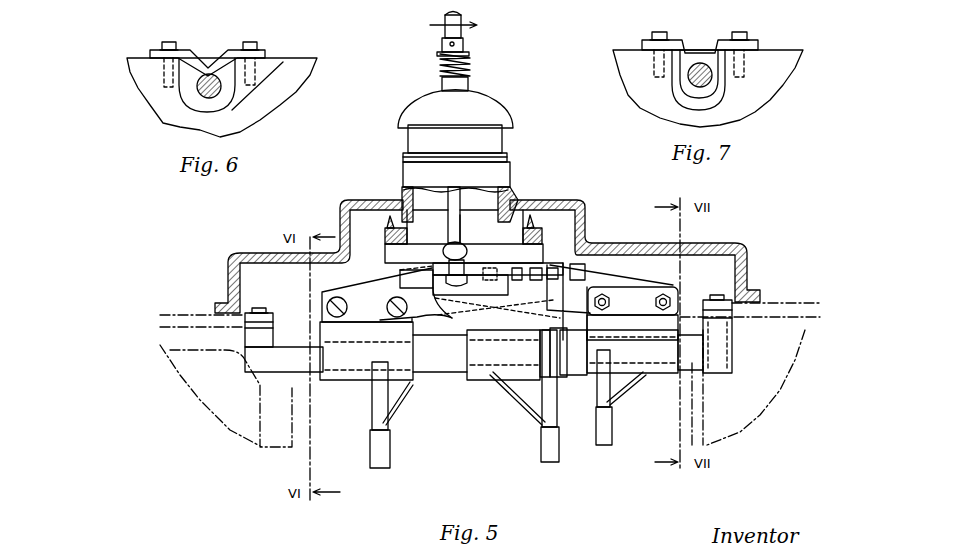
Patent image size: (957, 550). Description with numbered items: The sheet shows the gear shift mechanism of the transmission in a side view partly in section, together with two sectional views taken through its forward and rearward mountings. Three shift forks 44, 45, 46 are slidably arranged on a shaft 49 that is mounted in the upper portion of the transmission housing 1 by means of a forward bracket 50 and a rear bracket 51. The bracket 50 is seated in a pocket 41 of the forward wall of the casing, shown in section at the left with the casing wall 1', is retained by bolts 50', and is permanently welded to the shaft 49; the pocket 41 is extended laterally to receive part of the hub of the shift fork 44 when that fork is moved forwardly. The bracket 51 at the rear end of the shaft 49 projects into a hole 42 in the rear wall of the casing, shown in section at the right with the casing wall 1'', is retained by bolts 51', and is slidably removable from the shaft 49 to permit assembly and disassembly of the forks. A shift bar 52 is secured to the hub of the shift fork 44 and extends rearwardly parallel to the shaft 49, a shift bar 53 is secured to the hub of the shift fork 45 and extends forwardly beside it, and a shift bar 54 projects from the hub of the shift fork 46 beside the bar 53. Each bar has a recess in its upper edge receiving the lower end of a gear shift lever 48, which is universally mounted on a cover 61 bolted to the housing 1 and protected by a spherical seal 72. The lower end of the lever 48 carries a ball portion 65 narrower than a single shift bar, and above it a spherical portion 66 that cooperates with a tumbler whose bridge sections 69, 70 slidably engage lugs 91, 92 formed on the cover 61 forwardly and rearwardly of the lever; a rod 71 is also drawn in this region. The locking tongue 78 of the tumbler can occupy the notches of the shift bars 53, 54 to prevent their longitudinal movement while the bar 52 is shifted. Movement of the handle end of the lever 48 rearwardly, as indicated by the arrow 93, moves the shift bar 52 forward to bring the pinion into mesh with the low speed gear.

In FIG. 5, the transmission housing 1 is at (490, 375).
In FIG. 6, the machine frame 1' is at (222, 97).
In FIG. 7, the machine frame 1'' is at (706, 88).
In FIG. 5, the pocket 41 is at (273, 374).
In FIG. 6, the pocket 41 is at (280, 58).
In FIG. 7, the hole 42 is at (679, 94).
In FIG. 5, the shift fork 44 is at (371, 453).
In FIG. 5, the shift fork 45 is at (612, 431).
In FIG. 5, the shift fork 46 is at (541, 442).
In FIG. 5, the gear shift lever 48 is at (461, 206).
In FIG. 5, the shaft 49 is at (444, 364).
In FIG. 6, the shaft 49 is at (210, 98).
In FIG. 7, the shaft 49 is at (712, 78).
In FIG. 5, the bracket 50 is at (284, 342).
In FIG. 6, the bracket 50 is at (207, 55).
In FIG. 5, the bolts 50' is at (261, 301).
In FIG. 6, the bolts 50' is at (219, 53).
In FIG. 5, the bracket 51 is at (743, 362).
In FIG. 7, the bracket 51 is at (700, 35).
In FIG. 5, the bolts 51' is at (717, 325).
In FIG. 7, the bolts 51' is at (707, 42).
In FIG. 5, the shift bar 52 is at (372, 292).
In FIG. 5, the shift bar 53 is at (627, 283).
In FIG. 5, the shift bar 54 is at (466, 330).
In FIG. 5, the cover 61 is at (366, 197).
In FIG. 5, the ball portion 65 is at (467, 283).
In FIG. 5, the spherical portion 66 is at (467, 255).
In FIG. 5, the bridge section 69 is at (405, 238).
In FIG. 5, the bridge section 70 is at (524, 235).
In FIG. 5, the rod 71 is at (478, 245).
In FIG. 5, the spherical seal 72 is at (503, 110).
In FIG. 5, the locking tongue 78 is at (519, 276).
In FIG. 5, the lug 91 is at (376, 222).
In FIG. 5, the lug 92 is at (548, 225).
In FIG. 5, the arrow 93 is at (461, 52).